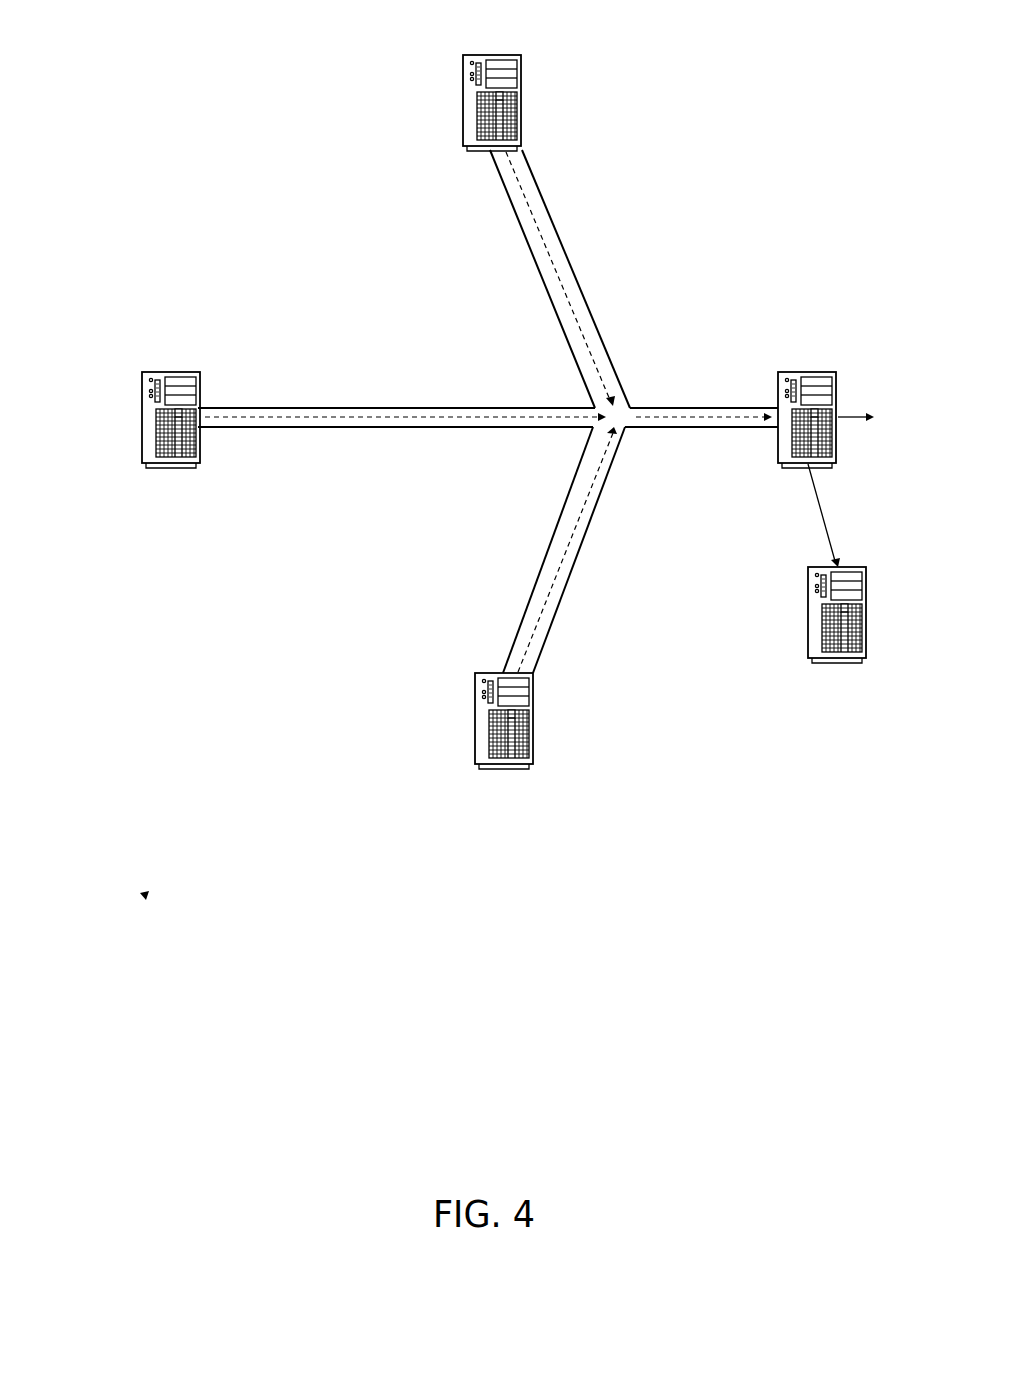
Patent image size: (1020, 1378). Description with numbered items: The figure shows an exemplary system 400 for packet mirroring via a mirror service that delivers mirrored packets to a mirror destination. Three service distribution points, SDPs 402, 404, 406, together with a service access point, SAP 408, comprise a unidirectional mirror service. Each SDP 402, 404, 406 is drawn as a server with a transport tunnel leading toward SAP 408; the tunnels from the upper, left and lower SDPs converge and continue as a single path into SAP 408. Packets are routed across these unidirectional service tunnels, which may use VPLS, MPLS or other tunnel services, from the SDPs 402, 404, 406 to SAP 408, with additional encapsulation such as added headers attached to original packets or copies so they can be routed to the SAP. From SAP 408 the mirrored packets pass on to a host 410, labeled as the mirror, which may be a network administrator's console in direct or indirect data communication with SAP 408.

The system 400 is at (144, 895).
The SDP 402 is at (463, 71).
The SDP 404 is at (142, 418).
The SDP 406 is at (475, 740).
The SAP 408 is at (808, 372).
The host 410 is at (808, 580).